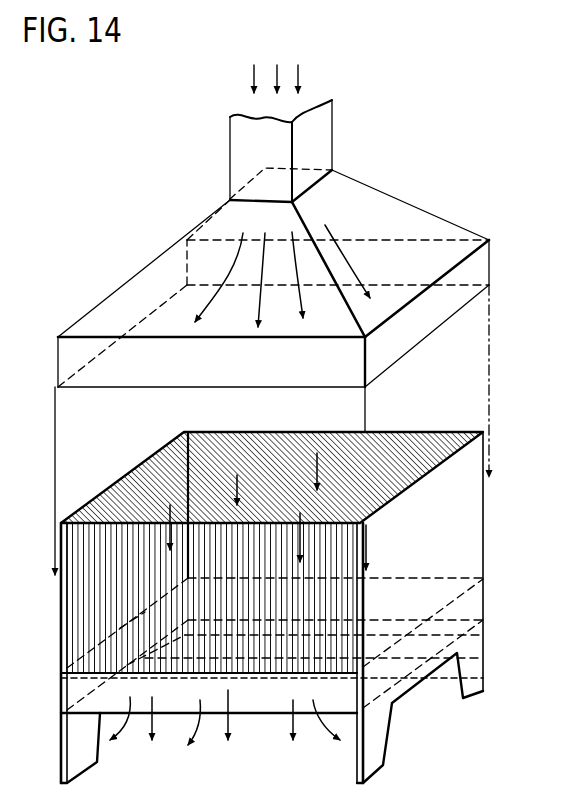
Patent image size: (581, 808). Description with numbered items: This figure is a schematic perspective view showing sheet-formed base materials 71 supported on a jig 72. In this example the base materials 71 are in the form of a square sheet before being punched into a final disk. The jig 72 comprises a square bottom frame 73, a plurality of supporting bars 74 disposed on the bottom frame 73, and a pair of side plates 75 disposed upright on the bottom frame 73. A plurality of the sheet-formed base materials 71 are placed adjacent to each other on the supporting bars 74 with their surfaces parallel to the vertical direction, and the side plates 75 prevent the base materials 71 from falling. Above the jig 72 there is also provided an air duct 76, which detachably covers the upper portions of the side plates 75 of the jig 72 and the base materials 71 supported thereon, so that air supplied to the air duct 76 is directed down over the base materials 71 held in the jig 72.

The base material 71 is at (408, 440).
The jig 72 is at (493, 429).
The bottom frame 73 is at (270, 705).
The supporting bars 74 is at (210, 682).
The side plates 75 is at (105, 492).
The air duct 76 is at (372, 200).